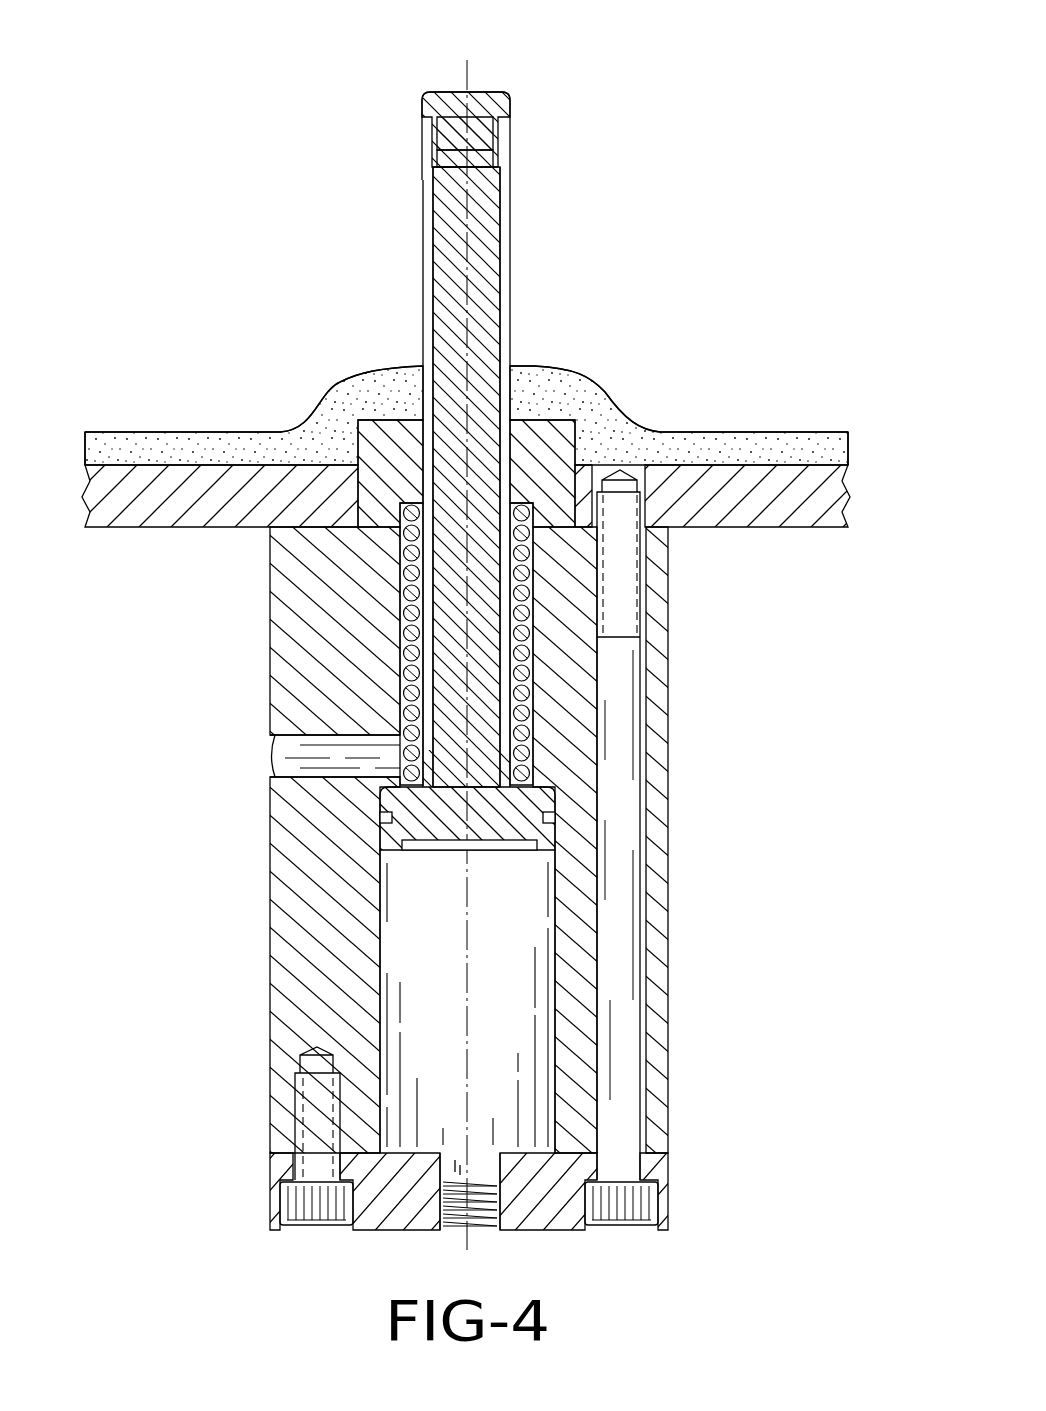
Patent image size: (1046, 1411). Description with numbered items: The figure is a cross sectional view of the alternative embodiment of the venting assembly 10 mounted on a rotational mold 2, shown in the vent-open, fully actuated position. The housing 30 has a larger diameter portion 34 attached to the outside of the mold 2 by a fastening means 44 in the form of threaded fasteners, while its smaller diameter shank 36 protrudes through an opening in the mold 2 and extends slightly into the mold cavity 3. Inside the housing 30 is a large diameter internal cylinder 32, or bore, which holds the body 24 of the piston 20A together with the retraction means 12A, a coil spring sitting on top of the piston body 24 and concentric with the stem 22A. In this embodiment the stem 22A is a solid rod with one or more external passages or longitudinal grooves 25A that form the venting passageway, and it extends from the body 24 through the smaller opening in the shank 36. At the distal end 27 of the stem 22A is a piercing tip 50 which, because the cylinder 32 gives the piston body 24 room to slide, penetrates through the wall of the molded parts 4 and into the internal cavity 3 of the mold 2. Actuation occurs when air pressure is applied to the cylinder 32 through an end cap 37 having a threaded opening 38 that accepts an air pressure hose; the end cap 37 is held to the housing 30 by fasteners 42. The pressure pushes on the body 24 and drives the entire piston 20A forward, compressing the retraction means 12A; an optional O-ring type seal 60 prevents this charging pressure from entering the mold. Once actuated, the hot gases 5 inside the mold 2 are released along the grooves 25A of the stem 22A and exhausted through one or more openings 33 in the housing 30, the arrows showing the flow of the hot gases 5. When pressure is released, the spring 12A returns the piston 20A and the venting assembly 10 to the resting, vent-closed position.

The mold 2 is at (780, 510).
The mold cavity 3 is at (462, 471).
The molded parts 4 is at (718, 442).
The hot gases 5 is at (428, 412).
The venting assembly 10 is at (290, 118).
The retraction means 12A is at (560, 670).
The piston 20A is at (422, 248).
The stem 22A is at (478, 270).
The body 24 is at (558, 852).
The longitudinal grooves 25A is at (505, 275).
The distal end 27 is at (425, 140).
The housing 30 is at (446, 873).
The internal cylinder 32 is at (380, 935).
The openings 33 is at (342, 752).
The larger diameter portion 34 is at (290, 580).
The shank 36 is at (390, 432).
The end cap 37 is at (380, 1190).
The threaded opening 38 is at (462, 1218).
The fasteners 42 is at (312, 1210).
The fastening means 44 is at (628, 1210).
The piercing tip 50 is at (438, 105).
The O-ring type seal 60 is at (545, 808).